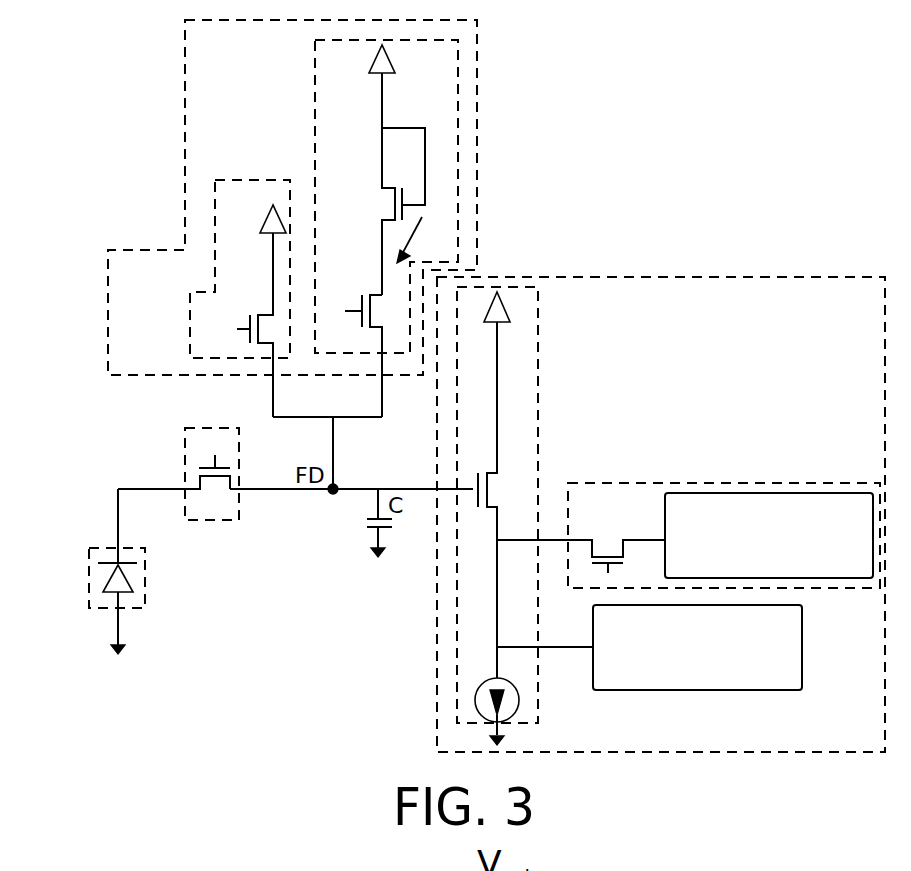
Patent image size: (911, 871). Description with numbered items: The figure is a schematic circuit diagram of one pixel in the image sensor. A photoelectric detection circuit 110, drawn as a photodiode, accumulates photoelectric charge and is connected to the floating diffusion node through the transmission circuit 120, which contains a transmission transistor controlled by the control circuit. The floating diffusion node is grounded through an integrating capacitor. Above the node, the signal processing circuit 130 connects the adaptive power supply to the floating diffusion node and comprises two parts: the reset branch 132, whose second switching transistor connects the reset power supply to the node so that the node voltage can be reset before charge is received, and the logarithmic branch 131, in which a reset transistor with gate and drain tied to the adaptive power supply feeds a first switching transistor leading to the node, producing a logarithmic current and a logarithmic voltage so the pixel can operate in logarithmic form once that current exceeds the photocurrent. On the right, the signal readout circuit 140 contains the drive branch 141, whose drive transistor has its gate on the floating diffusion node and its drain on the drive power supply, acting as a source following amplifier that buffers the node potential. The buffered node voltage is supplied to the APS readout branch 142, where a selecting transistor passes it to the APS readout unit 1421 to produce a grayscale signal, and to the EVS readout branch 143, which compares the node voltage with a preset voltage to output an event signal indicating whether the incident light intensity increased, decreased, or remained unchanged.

The photoelectric detection circuit 110 is at (89, 578).
The transmission circuit 120 is at (186, 462).
The signal processing circuit 130 is at (184, 142).
The logarithmic branch 131 is at (315, 115).
The reset branch 132 is at (190, 322).
The signal readout circuit 140 is at (676, 277).
The drive branch 141 is at (538, 382).
The APS readout branch 142 is at (718, 483).
The APS readout unit 1421 is at (769, 535).
The EVS readout branch 143 is at (649, 647).